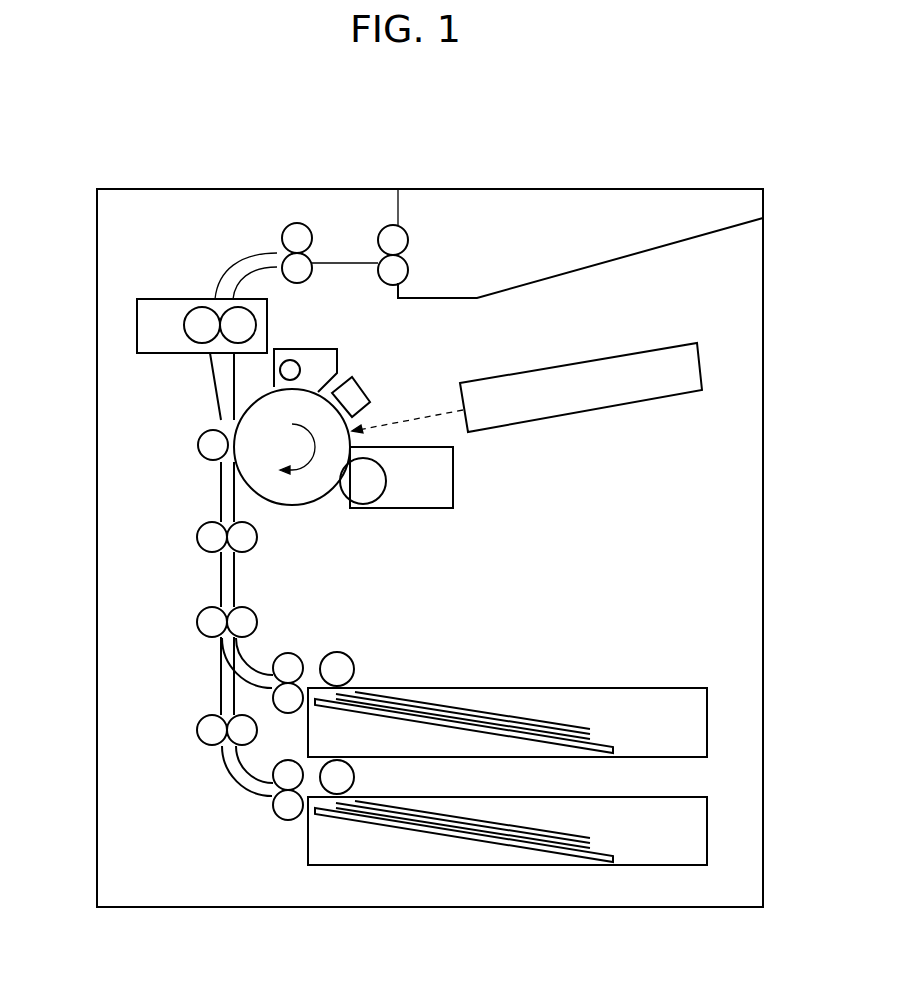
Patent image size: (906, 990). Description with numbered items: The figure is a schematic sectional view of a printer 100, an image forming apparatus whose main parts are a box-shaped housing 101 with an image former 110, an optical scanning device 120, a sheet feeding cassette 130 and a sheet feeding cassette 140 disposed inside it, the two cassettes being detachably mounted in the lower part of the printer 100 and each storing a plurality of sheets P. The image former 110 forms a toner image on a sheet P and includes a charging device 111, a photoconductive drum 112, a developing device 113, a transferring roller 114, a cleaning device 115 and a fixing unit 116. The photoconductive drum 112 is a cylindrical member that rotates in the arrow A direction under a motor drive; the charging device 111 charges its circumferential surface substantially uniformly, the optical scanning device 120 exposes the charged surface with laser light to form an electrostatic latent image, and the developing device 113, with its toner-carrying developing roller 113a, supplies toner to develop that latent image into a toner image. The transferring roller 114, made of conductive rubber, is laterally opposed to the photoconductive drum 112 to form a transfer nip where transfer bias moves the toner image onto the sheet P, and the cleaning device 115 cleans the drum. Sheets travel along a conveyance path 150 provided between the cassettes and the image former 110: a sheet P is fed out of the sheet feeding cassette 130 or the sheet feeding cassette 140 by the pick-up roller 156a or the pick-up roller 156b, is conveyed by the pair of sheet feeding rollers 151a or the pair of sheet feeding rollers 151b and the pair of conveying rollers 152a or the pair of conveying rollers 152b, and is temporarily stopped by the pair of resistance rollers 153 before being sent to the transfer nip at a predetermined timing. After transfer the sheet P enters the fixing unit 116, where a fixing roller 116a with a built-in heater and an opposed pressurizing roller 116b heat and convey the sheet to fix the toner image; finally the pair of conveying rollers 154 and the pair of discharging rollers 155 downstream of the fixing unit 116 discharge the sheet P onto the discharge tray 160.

The printer 100 is at (476, 486).
The housing 101 is at (763, 303).
The image former 110 is at (296, 437).
The charging device 111 is at (366, 388).
The photoconductive drum 112 is at (187, 441).
The developing device 113 is at (411, 511).
The developing roller 113a is at (387, 503).
The transferring roller 114 is at (198, 442).
The cleaning device 115 is at (300, 349).
The fixing unit 116 is at (151, 285).
The fixing roller 116a is at (197, 316).
The pressurizing roller 116b is at (234, 315).
The optical scanning device 120 is at (622, 402).
The sheet feeding cassette 130 is at (668, 687).
The sheet feeding cassette 140 is at (648, 795).
The conveyance path 150 is at (229, 762).
The pair of sheet feeding rollers 151a is at (292, 653).
The pair of sheet feeding rollers 151b is at (287, 822).
The pair of conveying rollers 152a is at (197, 622).
The pair of conveying rollers 152b is at (197, 730).
The pair of resistance rollers 153 is at (197, 537).
The pair of conveying rollers 154 is at (285, 224).
The pair of discharging rollers 155 is at (400, 226).
The pick-up roller 156a is at (353, 655).
The pick-up roller 156b is at (355, 773).
The discharge tray 160 is at (582, 268).
The sheet P is at (537, 720).
The arrow A direction A is at (240, 412).